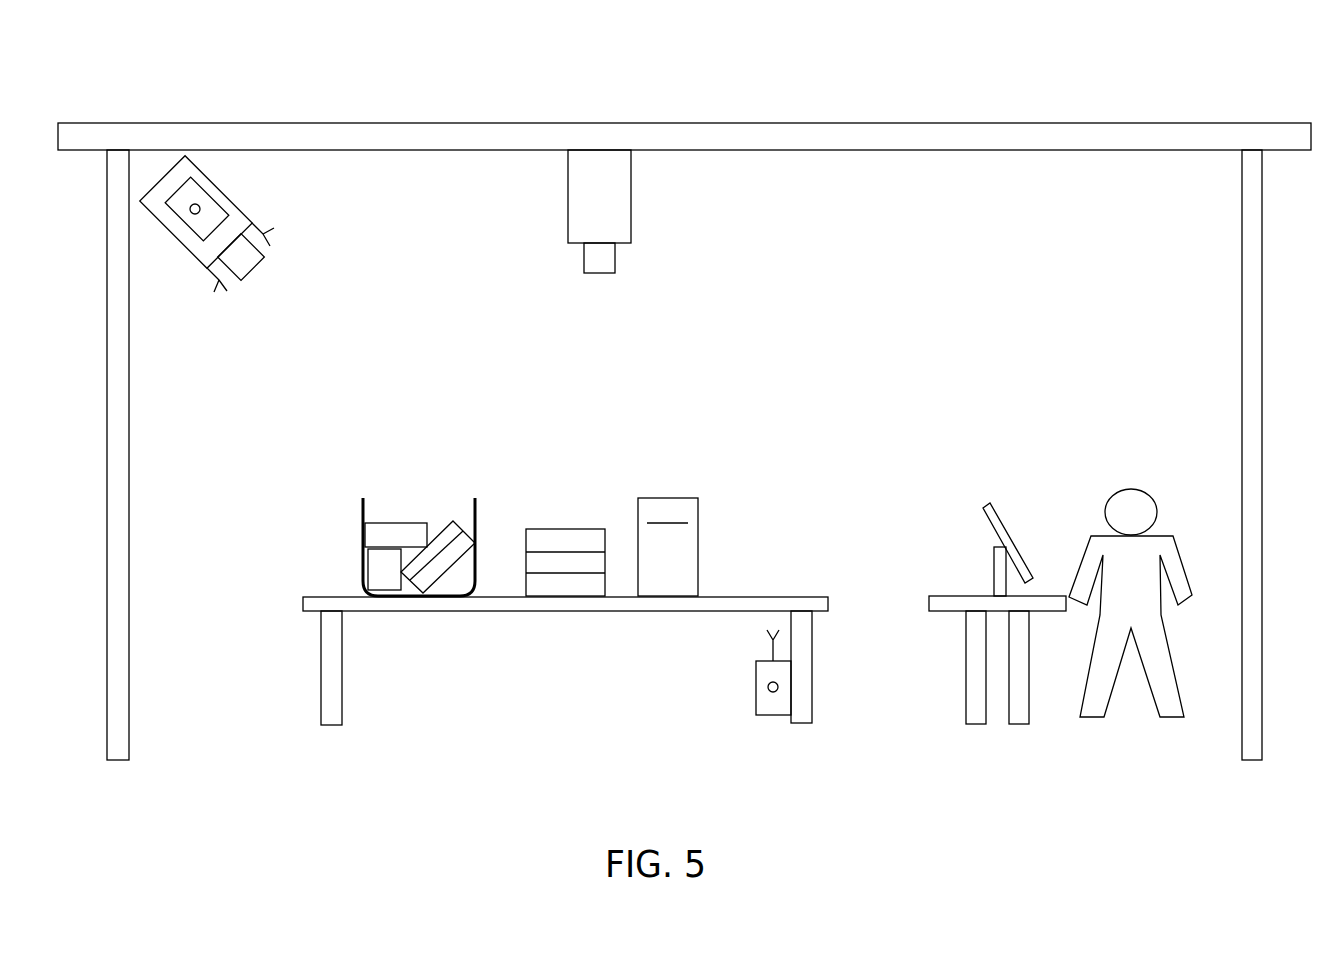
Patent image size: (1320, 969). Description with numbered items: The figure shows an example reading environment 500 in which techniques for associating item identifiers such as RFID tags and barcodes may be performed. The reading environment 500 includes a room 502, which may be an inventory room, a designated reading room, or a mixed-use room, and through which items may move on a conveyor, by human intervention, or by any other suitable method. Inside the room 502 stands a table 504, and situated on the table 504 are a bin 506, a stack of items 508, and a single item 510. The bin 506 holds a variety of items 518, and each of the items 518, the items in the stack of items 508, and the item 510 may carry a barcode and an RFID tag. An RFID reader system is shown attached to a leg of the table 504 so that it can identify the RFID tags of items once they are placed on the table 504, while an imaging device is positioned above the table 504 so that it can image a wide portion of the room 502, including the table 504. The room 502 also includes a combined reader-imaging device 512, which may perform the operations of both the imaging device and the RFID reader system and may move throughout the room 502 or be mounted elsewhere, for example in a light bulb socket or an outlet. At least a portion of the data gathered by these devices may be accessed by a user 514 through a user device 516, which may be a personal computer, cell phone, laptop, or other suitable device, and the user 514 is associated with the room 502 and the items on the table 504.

The reading environment 500 is at (1208, 59).
The room 502 is at (683, 123).
The table 504 is at (446, 611).
The bin 506 is at (362, 522).
The stack of items 508 is at (564, 490).
The item 510 is at (669, 498).
The combined reader-imaging device 512 is at (220, 188).
The user 514 is at (1132, 489).
The user device 516 is at (988, 505).
The items 518 is at (417, 470).